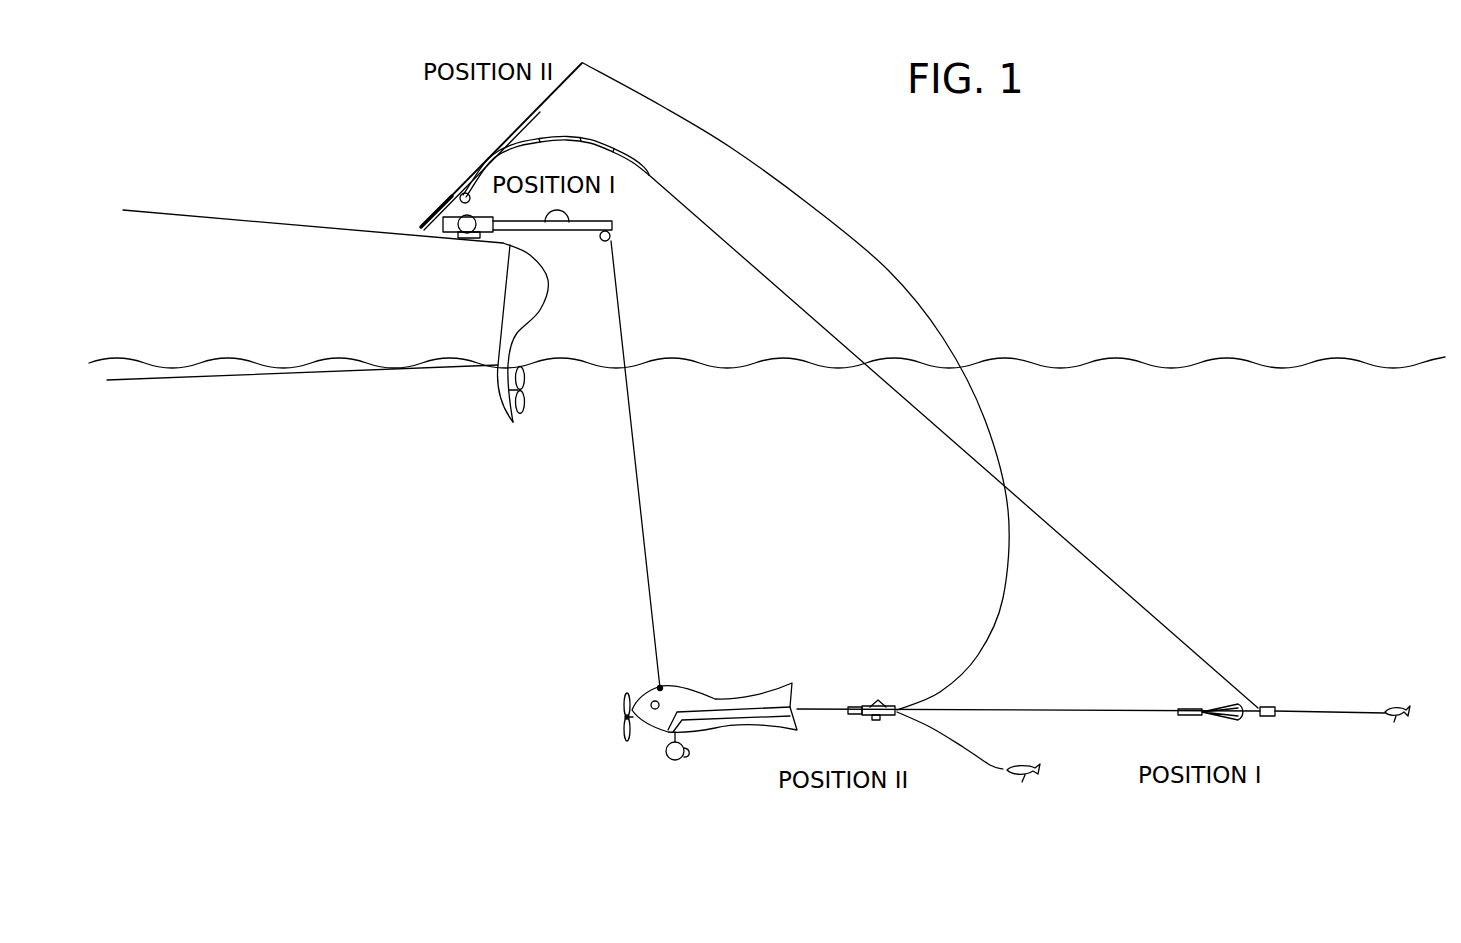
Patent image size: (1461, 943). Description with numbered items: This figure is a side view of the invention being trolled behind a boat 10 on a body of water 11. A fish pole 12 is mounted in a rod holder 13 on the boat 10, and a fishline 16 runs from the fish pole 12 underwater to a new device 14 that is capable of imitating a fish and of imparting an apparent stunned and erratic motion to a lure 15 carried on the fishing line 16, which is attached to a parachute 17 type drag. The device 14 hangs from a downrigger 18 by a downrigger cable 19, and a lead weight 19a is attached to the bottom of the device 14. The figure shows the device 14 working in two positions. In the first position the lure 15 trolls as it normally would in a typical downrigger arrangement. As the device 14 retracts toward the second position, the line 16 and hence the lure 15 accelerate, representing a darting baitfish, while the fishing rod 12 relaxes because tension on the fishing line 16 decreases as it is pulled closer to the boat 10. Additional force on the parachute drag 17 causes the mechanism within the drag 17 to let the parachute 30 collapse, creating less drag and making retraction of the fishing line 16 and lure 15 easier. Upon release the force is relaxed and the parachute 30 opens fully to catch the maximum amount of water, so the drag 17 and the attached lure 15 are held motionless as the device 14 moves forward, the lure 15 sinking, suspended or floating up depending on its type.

The boat 10 is at (267, 267).
The body of water 11 is at (322, 435).
The fish pole 12 is at (547, 100).
The rod holder 13 is at (447, 203).
The device 14 is at (713, 695).
The lure 15 is at (1040, 772).
The fishline 16 is at (888, 270).
The parachute type drag 17 is at (855, 717).
The downrigger 18 is at (575, 232).
The downrigger cable 19 is at (642, 522).
The lead weight 19a is at (673, 762).
The parachute 30 is at (1242, 718).